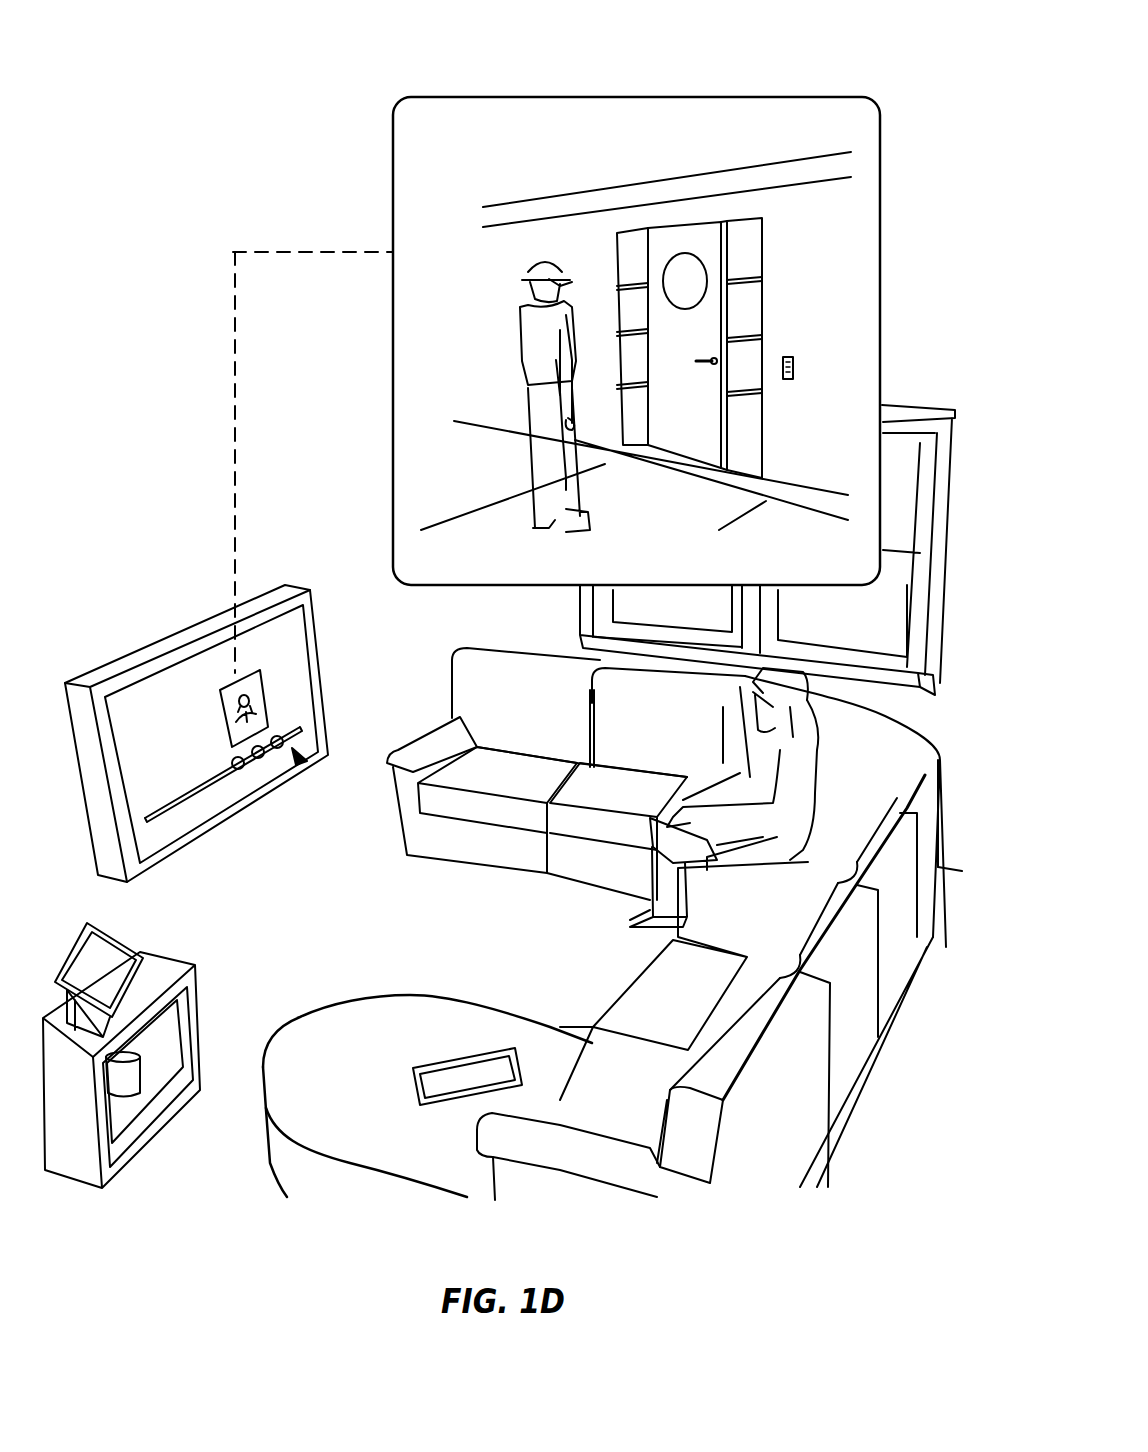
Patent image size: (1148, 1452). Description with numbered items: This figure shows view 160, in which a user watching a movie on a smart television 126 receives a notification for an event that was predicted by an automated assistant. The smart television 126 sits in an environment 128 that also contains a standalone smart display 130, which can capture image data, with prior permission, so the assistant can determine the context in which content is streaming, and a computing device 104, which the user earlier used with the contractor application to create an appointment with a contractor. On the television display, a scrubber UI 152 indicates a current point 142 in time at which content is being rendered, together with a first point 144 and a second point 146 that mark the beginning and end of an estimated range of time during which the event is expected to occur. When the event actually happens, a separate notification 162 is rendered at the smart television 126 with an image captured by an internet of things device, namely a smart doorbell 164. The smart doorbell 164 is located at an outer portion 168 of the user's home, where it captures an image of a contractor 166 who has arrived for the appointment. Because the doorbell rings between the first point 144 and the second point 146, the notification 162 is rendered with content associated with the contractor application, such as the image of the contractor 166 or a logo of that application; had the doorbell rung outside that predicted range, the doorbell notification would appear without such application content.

The view 160 is at (195, 78).
The outer portion 168 is at (823, 275).
The contractor 166 is at (518, 323).
The smart doorbell 164 is at (786, 380).
The smart television 126 is at (157, 726).
The notification 162 is at (263, 682).
The first point 144 is at (232, 760).
The current point 142 is at (259, 759).
The second point 146 is at (283, 738).
The scrubber UI 152 is at (305, 764).
The environment 128 is at (402, 942).
The standalone smart display 130 is at (117, 940).
The computing device 104 is at (412, 1085).